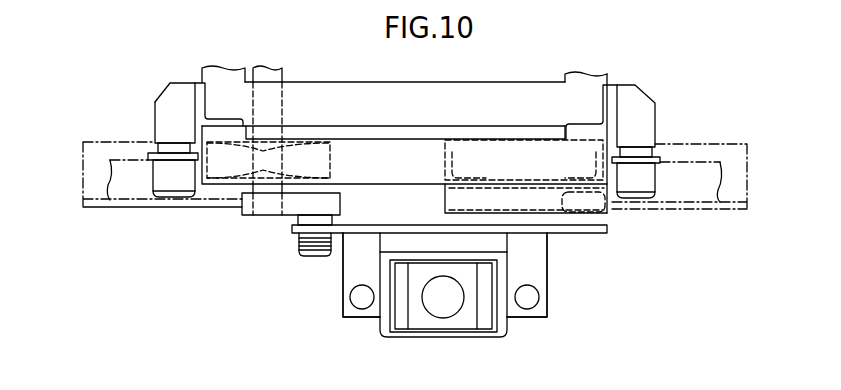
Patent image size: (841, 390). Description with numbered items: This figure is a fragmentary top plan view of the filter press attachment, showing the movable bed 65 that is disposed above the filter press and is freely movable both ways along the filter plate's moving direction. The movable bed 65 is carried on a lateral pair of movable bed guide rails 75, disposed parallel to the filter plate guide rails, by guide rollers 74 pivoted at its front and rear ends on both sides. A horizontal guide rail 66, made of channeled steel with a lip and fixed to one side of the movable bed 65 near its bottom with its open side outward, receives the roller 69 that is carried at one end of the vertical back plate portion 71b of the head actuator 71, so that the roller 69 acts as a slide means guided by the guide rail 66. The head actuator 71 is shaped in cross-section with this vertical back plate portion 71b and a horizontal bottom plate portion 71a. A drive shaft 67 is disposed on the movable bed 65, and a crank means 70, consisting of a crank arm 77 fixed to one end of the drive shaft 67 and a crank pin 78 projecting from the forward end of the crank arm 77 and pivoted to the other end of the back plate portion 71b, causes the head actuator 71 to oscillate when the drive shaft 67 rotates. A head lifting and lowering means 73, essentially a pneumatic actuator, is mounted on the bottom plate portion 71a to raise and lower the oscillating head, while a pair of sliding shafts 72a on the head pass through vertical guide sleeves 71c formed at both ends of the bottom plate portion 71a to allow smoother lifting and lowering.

The movable bed 65 is at (390, 82).
The horizontal guide rail 66 is at (612, 215).
The drive shaft 67 is at (280, 77).
The roller 69 is at (606, 212).
The crank means 70 is at (288, 263).
The head actuator 71 is at (454, 285).
The horizontal bottom plate portion 71a is at (386, 332).
The vertical back plate portion 71b is at (393, 228).
The vertical guide sleeves 71c is at (344, 298).
The sliding shafts 72a is at (362, 300).
The head lifting and lowering means 73 is at (442, 316).
The guide rollers 74 is at (173, 187).
The movable bed guide rails 75 is at (130, 190).
The crank arm 77 is at (290, 208).
The crank pin 78 is at (308, 254).